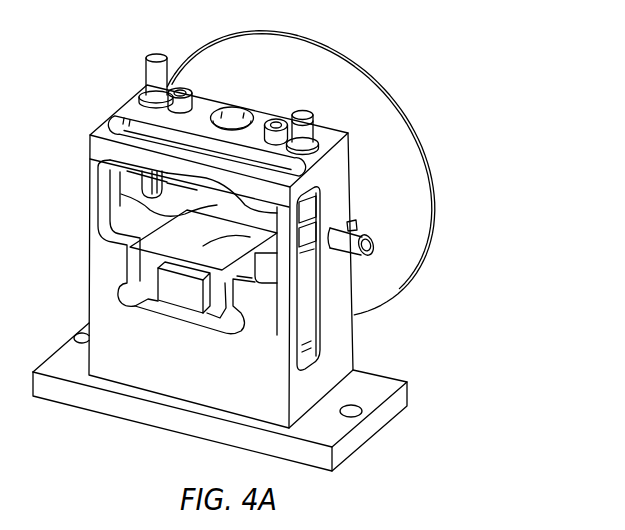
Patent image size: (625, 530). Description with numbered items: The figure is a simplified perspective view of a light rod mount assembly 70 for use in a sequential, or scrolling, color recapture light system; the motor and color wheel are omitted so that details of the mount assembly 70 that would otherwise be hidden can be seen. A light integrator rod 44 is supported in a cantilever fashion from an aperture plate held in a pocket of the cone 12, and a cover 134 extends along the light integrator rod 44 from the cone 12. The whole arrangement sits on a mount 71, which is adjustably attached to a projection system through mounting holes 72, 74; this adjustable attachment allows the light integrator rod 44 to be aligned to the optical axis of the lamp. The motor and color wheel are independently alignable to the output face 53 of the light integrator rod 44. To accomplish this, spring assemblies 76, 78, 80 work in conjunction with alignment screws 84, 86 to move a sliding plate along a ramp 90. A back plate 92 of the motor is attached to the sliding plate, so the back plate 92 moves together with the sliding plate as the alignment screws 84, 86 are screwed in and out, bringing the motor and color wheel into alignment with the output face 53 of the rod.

The cone 12 is at (427, 170).
The light rod mount assembly 70 is at (514, 99).
The back plate 92 is at (300, 186).
The mount 71 is at (382, 380).
The mounting hole 72 is at (77, 336).
The mounting hole 74 is at (362, 404).
The alignment screw 84 is at (155, 58).
The spring assembly 80 is at (179, 92).
The spring assembly 78 is at (275, 122).
The alignment screw 86 is at (304, 114).
The spring assembly 76 is at (365, 231).
The ramp 90 is at (140, 199).
The cover 134 is at (250, 208).
The light integrator rod 44 is at (107, 242).
The output face 53 is at (175, 293).